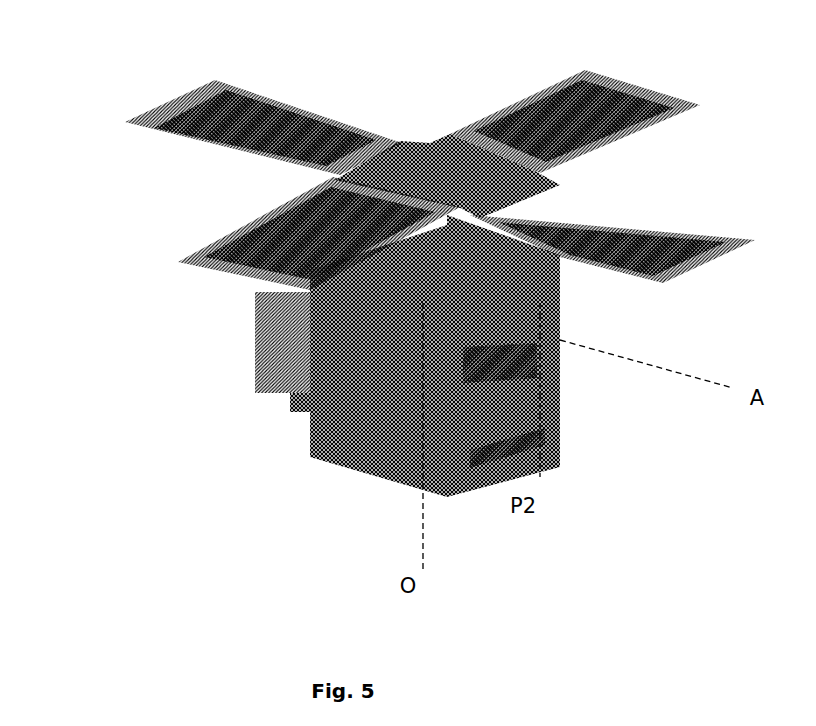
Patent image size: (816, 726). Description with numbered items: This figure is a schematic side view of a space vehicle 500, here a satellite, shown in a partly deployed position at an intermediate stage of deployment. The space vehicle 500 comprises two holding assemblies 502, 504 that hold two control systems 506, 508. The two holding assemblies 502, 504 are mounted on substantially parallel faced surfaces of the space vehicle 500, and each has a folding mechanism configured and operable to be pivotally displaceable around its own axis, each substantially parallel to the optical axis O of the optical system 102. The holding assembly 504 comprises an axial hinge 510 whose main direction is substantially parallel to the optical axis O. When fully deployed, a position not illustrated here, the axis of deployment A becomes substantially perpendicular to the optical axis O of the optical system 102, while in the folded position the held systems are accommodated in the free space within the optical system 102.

The space vehicle 500 is at (148, 95).
The optical system 102 is at (433, 435).
The holding assembly 502 is at (265, 333).
The holding assembly 504 is at (560, 423).
The control system 506 is at (298, 381).
The control system 508 is at (517, 435).
The axial hinge 510 is at (540, 333).